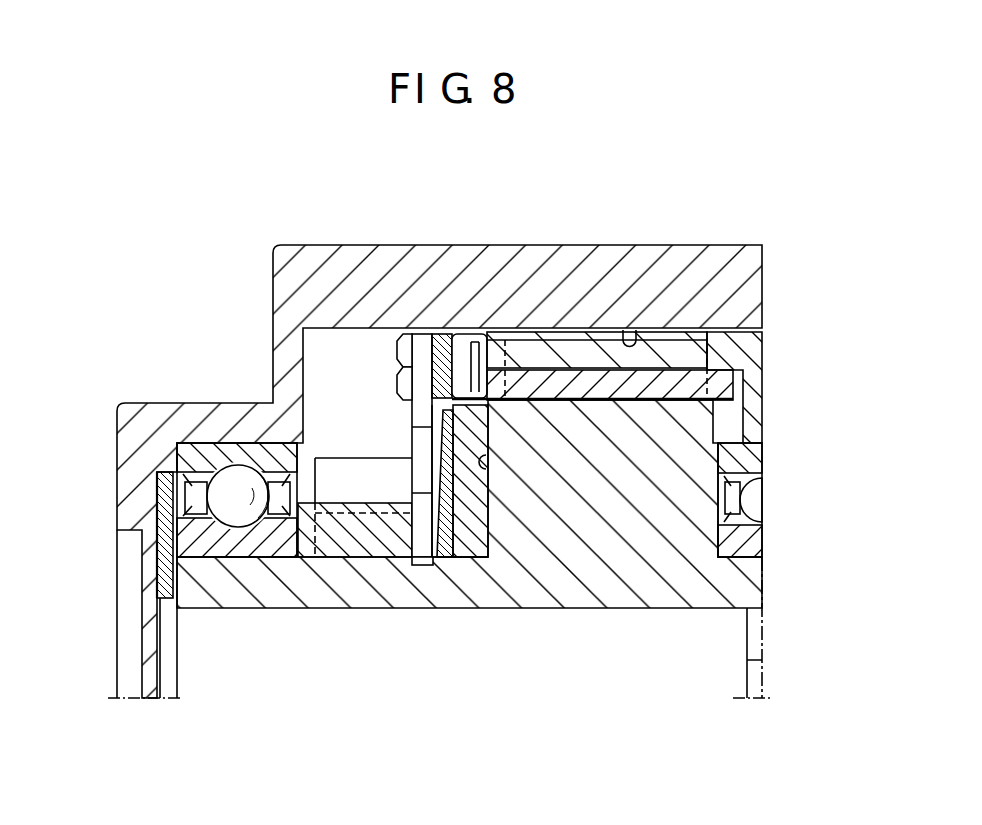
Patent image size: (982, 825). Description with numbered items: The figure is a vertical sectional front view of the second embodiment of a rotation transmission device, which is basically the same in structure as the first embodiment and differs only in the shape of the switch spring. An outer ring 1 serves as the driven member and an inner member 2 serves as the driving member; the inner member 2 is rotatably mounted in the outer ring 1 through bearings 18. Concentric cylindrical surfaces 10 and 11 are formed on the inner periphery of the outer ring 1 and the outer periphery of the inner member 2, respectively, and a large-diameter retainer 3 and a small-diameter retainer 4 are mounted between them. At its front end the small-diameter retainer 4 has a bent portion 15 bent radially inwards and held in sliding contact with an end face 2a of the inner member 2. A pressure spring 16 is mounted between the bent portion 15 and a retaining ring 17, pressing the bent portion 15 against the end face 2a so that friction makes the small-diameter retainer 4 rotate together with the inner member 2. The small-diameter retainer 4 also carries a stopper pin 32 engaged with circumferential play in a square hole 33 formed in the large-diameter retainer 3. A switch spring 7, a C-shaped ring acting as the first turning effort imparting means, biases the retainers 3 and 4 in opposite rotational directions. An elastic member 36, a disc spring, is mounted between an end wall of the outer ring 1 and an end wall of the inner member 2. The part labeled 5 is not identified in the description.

The outer ring 1 is at (143, 462).
The inner member 2 is at (640, 578).
The end face of the inner member 2a is at (478, 455).
The large-diameter retainer 3 is at (762, 295).
The small-diameter retainer 4 is at (703, 383).
The sleeve 5 is at (680, 343).
The switch spring 7 is at (401, 438).
The cylindrical surface 10 is at (629, 330).
The cylindrical surface 11 is at (562, 395).
The bent portion 15 is at (470, 547).
The pressure spring 16 is at (443, 553).
The retaining ring 17 is at (422, 563).
The bearings 18 is at (207, 538).
The stopper pin 32 is at (466, 366).
The square hole 33 is at (455, 338).
The elastic member 36 is at (167, 582).